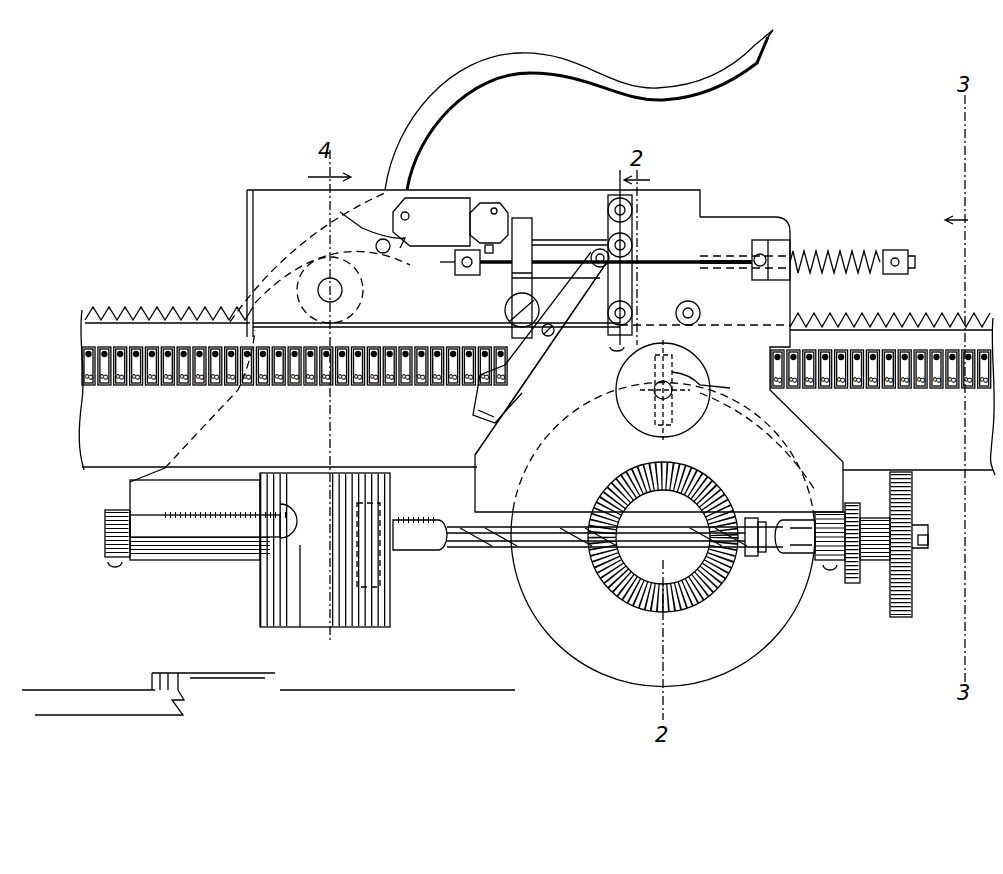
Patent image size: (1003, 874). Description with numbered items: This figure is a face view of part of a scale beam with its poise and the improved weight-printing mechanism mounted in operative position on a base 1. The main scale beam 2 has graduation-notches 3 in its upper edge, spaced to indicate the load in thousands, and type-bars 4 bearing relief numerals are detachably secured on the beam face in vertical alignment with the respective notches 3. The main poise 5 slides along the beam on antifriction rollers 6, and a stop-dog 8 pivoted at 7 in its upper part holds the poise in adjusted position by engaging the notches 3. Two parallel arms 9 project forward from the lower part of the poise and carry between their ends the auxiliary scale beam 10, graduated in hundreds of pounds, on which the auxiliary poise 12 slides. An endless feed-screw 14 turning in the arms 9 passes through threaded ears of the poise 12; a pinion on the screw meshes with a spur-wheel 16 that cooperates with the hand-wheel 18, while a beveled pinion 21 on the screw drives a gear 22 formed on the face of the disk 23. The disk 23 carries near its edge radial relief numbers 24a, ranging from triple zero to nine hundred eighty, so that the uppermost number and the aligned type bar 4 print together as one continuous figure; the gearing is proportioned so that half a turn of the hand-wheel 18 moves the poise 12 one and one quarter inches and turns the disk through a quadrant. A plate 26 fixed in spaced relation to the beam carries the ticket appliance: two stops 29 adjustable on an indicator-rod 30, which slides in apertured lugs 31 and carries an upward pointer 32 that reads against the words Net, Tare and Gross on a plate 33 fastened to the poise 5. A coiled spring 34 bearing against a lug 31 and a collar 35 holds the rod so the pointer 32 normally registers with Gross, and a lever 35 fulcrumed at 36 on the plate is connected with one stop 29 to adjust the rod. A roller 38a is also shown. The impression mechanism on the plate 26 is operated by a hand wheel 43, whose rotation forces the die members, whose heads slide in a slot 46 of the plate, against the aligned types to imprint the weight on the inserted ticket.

The base 1 is at (268, 694).
The main scale beam 2 is at (80, 425).
The graduation-notches 3 is at (112, 313).
The type-bars 4 is at (100, 353).
The main poise 5 is at (278, 190).
The antifriction rollers 6 is at (615, 251).
The pivot 7 is at (372, 232).
The stop-dog 8 is at (458, 68).
The parallel arms 9 is at (107, 517).
The auxiliary scale beam 10 is at (160, 542).
The auxiliary poise 12 is at (325, 550).
The endless feed-screw 14 is at (472, 550).
The spur-wheel 16 is at (852, 586).
The hand-wheel 18 is at (912, 592).
The beveled pinion 21 is at (740, 518).
The gear 22 is at (730, 562).
The disk 23 is at (778, 640).
The relief numbers 24a is at (770, 682).
The plate 26 is at (659, 364).
The stops 29 is at (598, 250).
The indicator-rod 30 is at (725, 258).
The apertured lugs 31 is at (520, 245).
The pointer 32 is at (490, 210).
The plate 33 is at (438, 197).
The coiled spring 34 is at (843, 258).
The collar / lever 35 is at (897, 250).
The fulcrum 36 is at (505, 325).
The roller 38a is at (680, 308).
The hand wheel 43 is at (698, 422).
The slot 46 is at (705, 388).